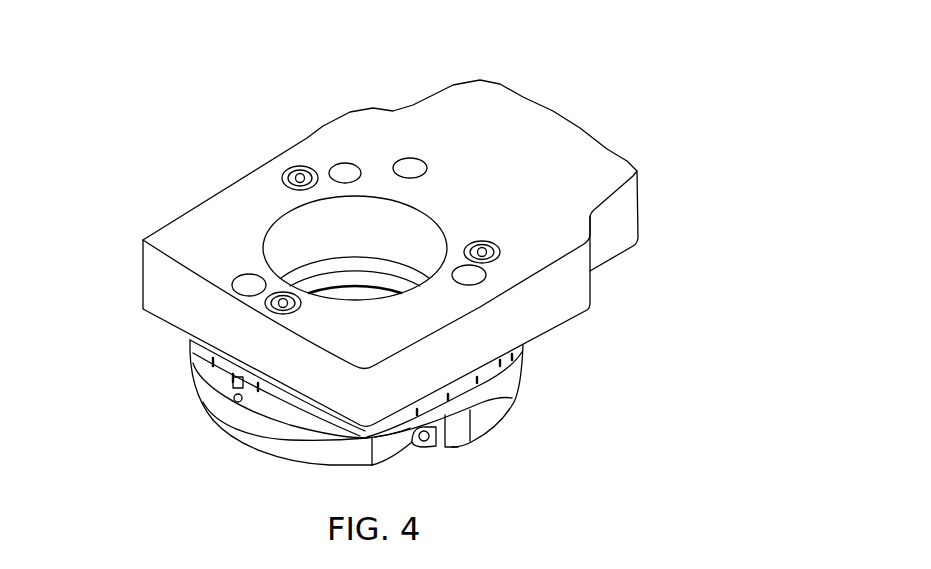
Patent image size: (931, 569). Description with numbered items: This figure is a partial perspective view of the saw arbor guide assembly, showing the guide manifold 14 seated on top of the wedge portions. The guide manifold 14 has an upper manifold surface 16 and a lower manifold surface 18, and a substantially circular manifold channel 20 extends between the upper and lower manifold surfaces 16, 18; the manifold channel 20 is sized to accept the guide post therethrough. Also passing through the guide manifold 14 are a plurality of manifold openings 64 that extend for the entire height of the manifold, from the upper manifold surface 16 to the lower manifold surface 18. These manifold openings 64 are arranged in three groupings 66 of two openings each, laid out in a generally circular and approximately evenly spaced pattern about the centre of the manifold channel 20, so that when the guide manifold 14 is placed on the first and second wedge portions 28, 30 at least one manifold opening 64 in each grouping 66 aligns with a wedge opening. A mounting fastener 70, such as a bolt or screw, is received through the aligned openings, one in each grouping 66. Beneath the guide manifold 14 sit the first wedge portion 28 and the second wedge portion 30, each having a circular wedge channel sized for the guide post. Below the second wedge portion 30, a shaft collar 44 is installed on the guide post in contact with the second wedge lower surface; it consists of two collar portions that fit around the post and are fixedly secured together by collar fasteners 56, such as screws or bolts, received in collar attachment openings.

The guide manifold 14 is at (349, 224).
The upper manifold surface 16 is at (208, 232).
The lower manifold surface 18 is at (167, 330).
The manifold channel 20 is at (407, 240).
The first wedge portion 28 is at (490, 375).
The second wedge portion 30 is at (482, 397).
The shaft collar 44 is at (280, 440).
The collar fasteners 56 is at (433, 440).
The manifold openings 64 is at (480, 278).
The groupings 66 is at (367, 160).
The mounting fastener 70 is at (486, 247).